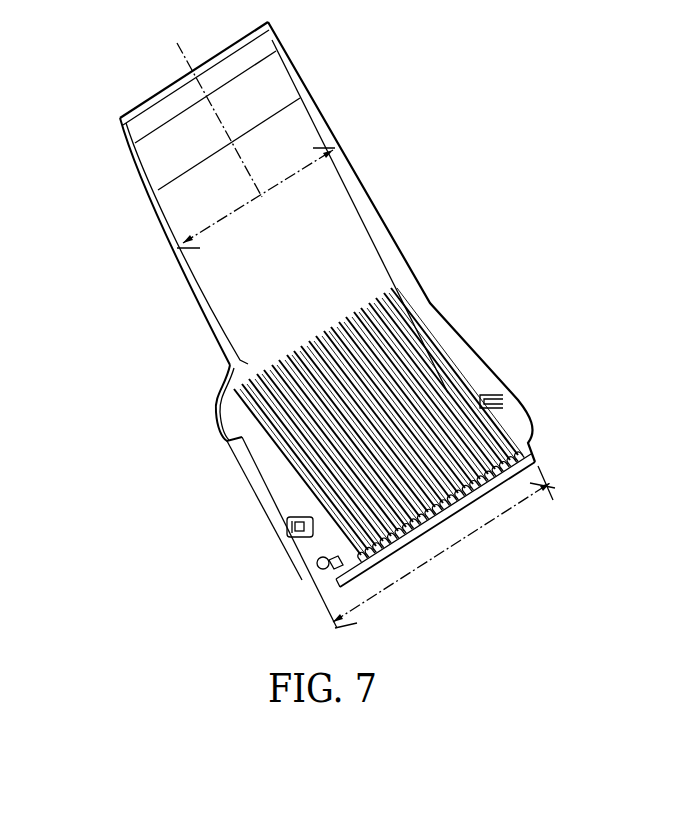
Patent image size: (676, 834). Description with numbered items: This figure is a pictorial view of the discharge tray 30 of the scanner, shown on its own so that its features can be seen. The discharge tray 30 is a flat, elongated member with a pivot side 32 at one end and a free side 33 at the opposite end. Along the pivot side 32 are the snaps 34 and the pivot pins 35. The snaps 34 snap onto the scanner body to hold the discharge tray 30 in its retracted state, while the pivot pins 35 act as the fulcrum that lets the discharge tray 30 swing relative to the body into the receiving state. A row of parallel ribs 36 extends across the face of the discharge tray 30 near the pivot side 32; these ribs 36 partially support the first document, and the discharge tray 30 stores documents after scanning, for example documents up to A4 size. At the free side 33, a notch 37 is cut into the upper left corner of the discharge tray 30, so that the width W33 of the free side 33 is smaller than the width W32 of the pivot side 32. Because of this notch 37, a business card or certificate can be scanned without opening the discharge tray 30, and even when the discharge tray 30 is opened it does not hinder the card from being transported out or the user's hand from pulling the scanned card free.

The discharge tray 30 is at (500, 130).
The pivot side 32 is at (312, 578).
The free side 33 is at (166, 84).
The snaps 34 is at (288, 526).
The pivot pins 35 is at (317, 563).
The ribs 36 is at (446, 404).
The notch 37 is at (215, 350).
The width of the pivot side W32 is at (448, 550).
The width of the free side W33 is at (241, 126).